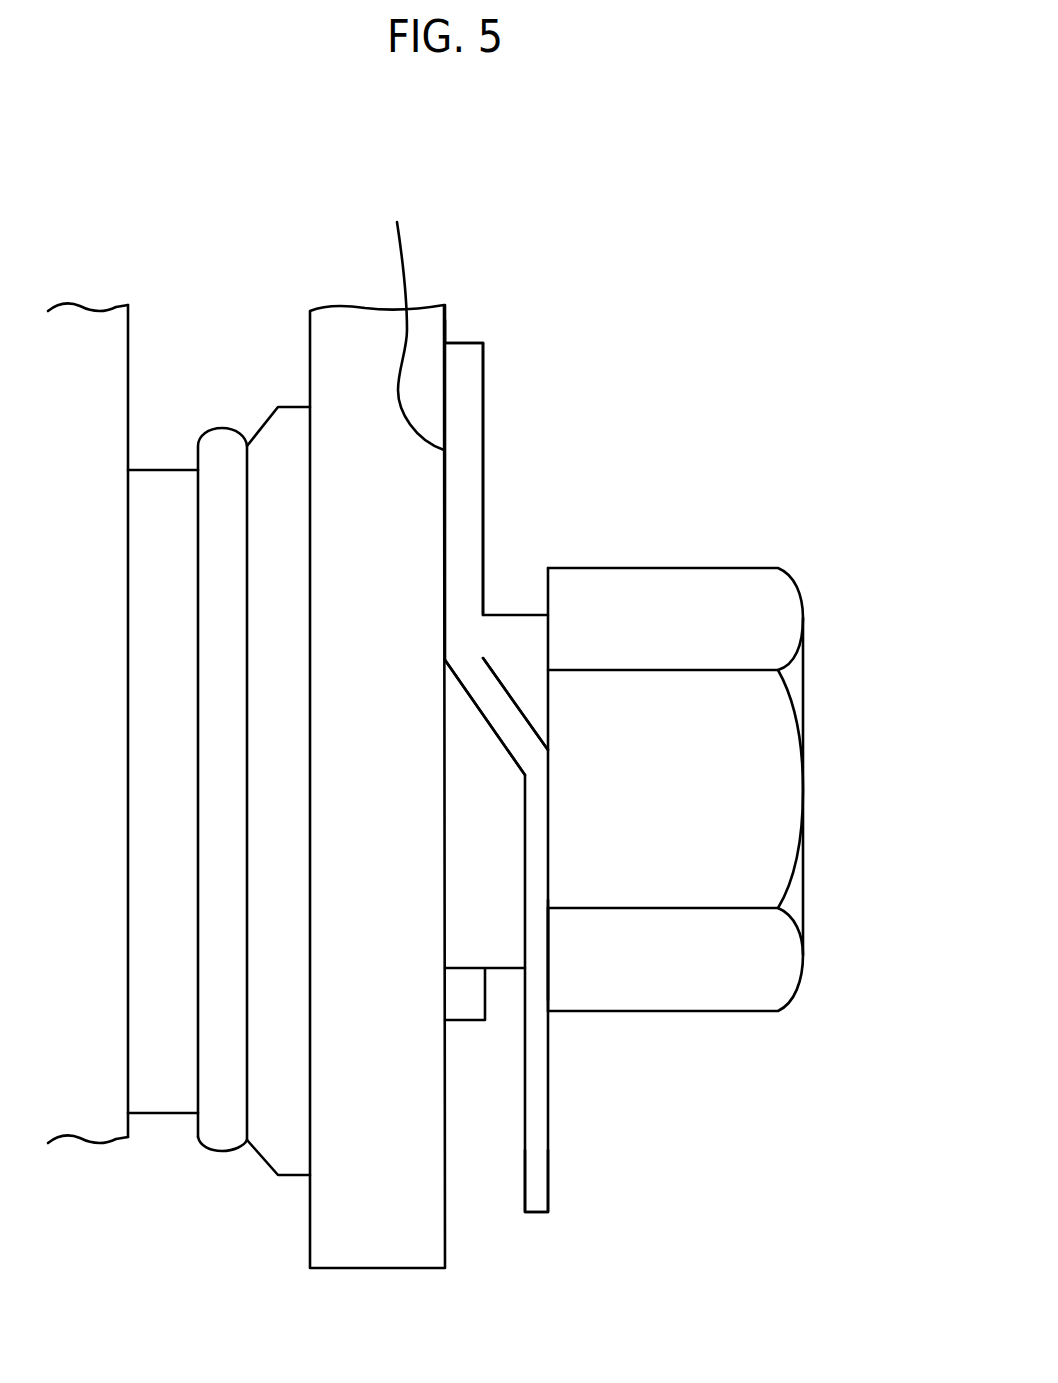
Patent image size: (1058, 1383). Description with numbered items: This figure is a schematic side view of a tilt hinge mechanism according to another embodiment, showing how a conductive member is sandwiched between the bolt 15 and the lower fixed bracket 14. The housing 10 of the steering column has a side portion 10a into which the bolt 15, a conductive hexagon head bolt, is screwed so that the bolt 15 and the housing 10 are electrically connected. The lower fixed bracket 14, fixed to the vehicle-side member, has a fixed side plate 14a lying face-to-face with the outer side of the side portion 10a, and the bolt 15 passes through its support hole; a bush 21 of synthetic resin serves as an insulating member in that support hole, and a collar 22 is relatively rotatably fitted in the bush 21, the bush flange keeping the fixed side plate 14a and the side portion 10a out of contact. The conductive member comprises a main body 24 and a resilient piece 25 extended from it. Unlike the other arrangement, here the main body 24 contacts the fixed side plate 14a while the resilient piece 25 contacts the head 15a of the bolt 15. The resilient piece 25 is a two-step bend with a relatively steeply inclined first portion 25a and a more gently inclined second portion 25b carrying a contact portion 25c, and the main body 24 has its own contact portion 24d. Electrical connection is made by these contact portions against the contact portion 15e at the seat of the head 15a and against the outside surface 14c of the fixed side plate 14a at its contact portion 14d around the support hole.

The housing 10 is at (129, 343).
The side portion 10a is at (128, 415).
The lower fixed bracket 14 is at (447, 317).
The fixed side plate 14a is at (425, 540).
The outside surface 14c is at (446, 333).
The contact portion 14d is at (446, 410).
The bolt 15 is at (708, 567).
The head 15a is at (740, 990).
The contact portion 15e is at (548, 993).
The bush 21 is at (272, 1147).
The collar 22 is at (168, 1100).
The main body 24 is at (485, 475).
The contact portion 24d is at (403, 317).
The resilient piece 25 is at (550, 1157).
The first portion 25a is at (510, 722).
The second portion 25b is at (533, 1135).
The contact portion 25c is at (548, 953).